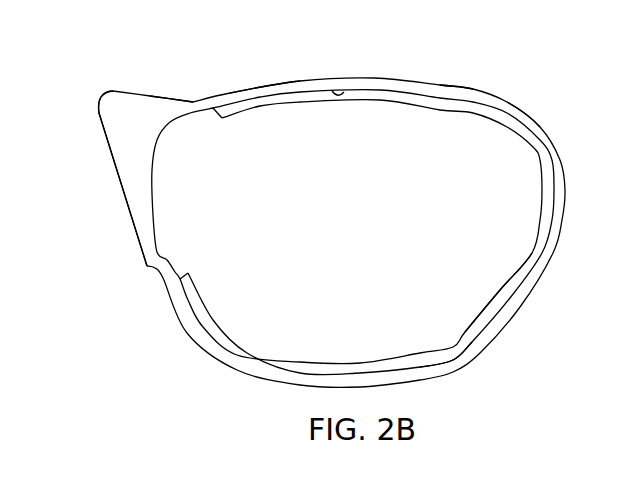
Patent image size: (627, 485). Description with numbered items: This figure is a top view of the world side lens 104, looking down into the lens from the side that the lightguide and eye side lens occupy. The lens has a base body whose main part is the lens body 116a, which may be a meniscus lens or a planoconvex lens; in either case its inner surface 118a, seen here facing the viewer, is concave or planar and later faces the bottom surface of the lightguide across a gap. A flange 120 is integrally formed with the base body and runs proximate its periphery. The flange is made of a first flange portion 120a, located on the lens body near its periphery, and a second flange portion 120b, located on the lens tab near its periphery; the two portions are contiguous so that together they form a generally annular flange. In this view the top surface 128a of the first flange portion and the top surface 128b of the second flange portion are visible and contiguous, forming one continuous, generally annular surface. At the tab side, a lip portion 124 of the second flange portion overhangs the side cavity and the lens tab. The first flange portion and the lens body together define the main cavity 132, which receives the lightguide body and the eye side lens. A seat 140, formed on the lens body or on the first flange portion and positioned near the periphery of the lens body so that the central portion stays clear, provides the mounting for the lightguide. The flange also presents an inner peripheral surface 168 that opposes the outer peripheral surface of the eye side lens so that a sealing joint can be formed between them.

The world side lens 104 is at (193, 342).
The lens body 116a is at (447, 335).
The inner surface 118a is at (470, 290).
The flange 120 is at (260, 90).
The first flange portion 120a is at (452, 84).
The second flange portion 120b is at (128, 212).
The lip portion 124 is at (118, 147).
The top surface of first flange portion 128a is at (528, 115).
The top surface of second flange portion 128b is at (162, 105).
The main cavity 132 is at (393, 120).
The seat 140 is at (483, 112).
The inner peripheral surface of flange 168 is at (335, 91).